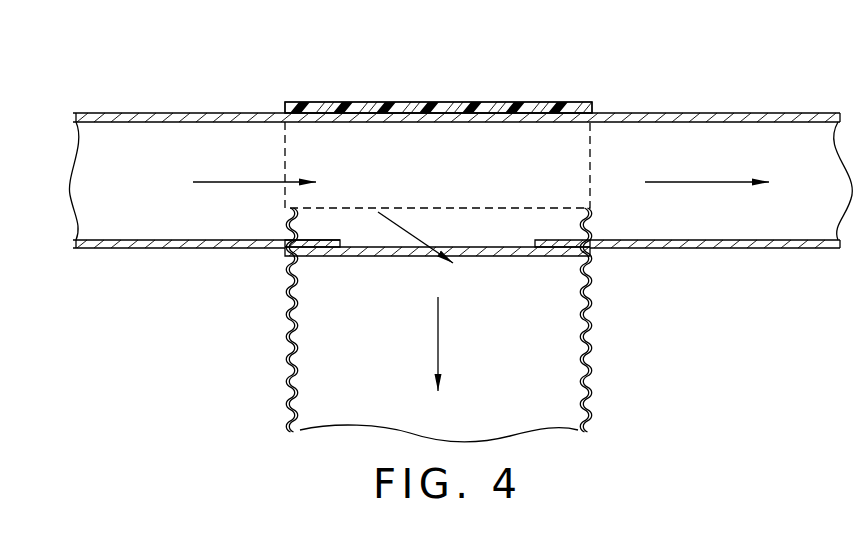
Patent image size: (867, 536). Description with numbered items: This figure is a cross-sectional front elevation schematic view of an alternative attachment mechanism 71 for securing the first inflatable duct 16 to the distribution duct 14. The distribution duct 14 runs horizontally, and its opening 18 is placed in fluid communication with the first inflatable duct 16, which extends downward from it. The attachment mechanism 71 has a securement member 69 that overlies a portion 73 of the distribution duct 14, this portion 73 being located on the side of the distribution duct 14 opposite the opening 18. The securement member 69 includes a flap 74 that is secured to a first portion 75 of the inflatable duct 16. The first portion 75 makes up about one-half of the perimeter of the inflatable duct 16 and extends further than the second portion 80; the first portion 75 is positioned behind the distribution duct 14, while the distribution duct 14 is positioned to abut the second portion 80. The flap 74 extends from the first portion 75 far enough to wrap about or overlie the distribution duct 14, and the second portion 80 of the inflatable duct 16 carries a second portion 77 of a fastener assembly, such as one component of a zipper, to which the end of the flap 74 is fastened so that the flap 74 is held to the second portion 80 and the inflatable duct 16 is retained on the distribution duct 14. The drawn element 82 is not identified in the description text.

The distribution duct 14 is at (242, 113).
The first inflatable duct 16 is at (588, 226).
The opening 18 is at (459, 227).
The securement member 69 is at (339, 96).
The attachment mechanism 71 is at (457, 60).
The portion of the distribution duct 73 is at (450, 129).
The flap 74 is at (562, 102).
The first portion of inflatable duct 75 is at (281, 217).
The second portion of fastener assembly 77 is at (290, 253).
The second portion of inflatable duct 80 is at (333, 268).
The lower wall surface 82 is at (482, 268).